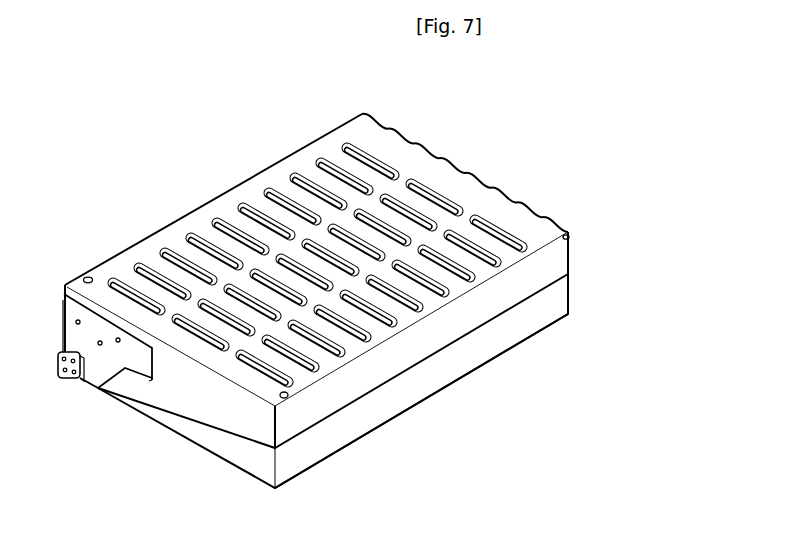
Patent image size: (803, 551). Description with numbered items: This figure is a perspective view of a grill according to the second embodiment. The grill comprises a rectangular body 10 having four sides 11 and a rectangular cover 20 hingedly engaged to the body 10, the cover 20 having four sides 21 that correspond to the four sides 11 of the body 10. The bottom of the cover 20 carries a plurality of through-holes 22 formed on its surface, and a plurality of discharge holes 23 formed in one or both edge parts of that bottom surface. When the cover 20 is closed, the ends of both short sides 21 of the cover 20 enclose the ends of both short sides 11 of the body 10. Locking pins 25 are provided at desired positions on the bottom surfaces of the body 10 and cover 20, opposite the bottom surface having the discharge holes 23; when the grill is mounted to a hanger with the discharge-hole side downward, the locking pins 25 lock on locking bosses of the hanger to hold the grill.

The body 10 is at (405, 412).
The sides of the body 11 is at (472, 358).
The cover 20 is at (238, 187).
The sides of the cover 21 is at (510, 297).
The through-holes 22 is at (312, 175).
The discharge holes 23 is at (473, 172).
The locking pins 25 is at (89, 277).